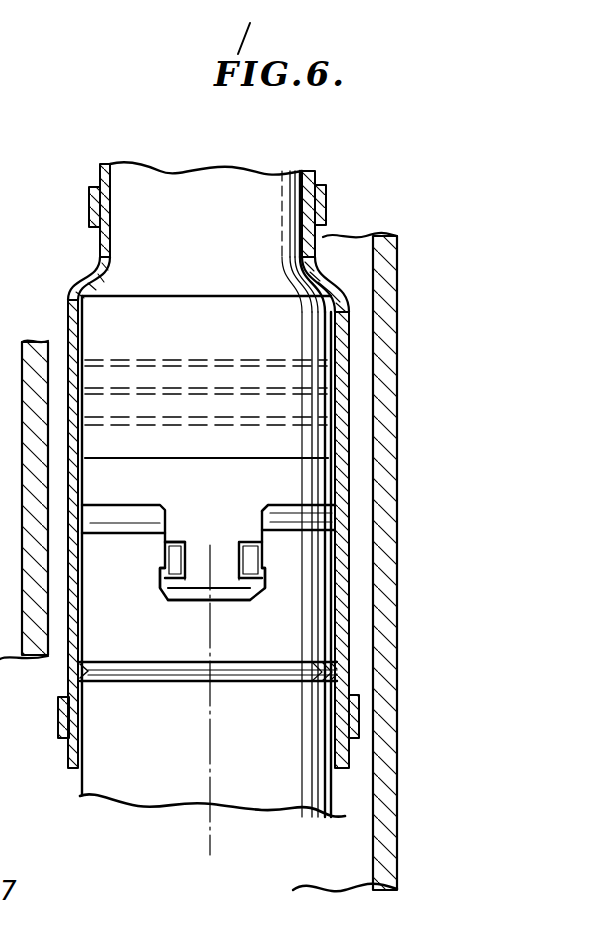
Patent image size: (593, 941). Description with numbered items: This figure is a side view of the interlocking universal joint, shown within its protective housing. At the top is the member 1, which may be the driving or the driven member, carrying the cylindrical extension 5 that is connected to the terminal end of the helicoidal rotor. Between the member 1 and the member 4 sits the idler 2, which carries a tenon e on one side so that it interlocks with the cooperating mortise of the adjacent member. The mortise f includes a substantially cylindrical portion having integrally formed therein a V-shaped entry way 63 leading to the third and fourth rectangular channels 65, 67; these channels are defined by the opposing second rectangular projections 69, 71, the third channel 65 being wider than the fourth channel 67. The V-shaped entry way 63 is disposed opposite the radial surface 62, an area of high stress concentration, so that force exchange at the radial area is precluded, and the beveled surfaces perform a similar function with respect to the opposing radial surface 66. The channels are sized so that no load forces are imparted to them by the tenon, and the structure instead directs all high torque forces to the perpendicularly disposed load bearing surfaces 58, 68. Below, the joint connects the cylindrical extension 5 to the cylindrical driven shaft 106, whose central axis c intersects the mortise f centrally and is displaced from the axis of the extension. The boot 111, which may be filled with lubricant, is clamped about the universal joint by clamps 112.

The member 1 is at (155, 325).
The idler 2 is at (317, 477).
The member 4 is at (317, 587).
The cylindrical extension 5 is at (253, 181).
The load bearing surface 58 is at (127, 505).
The radial surface 62 is at (266, 512).
The V-shaped entry way 63 is at (264, 513).
The third rectangular channel 65 is at (199, 601).
The radial surface 66 is at (171, 602).
The fourth rectangular channel 67 is at (166, 552).
The load bearing surface 68 is at (178, 541).
The second rectangular projection 69 is at (252, 559).
The second rectangular projection 71 is at (170, 562).
The driven shaft 106 is at (142, 791).
The boot 111 is at (349, 308).
The clamps 112 is at (327, 203).
The central axis c is at (212, 748).
The tenon e is at (195, 591).
The mortise f is at (262, 591).